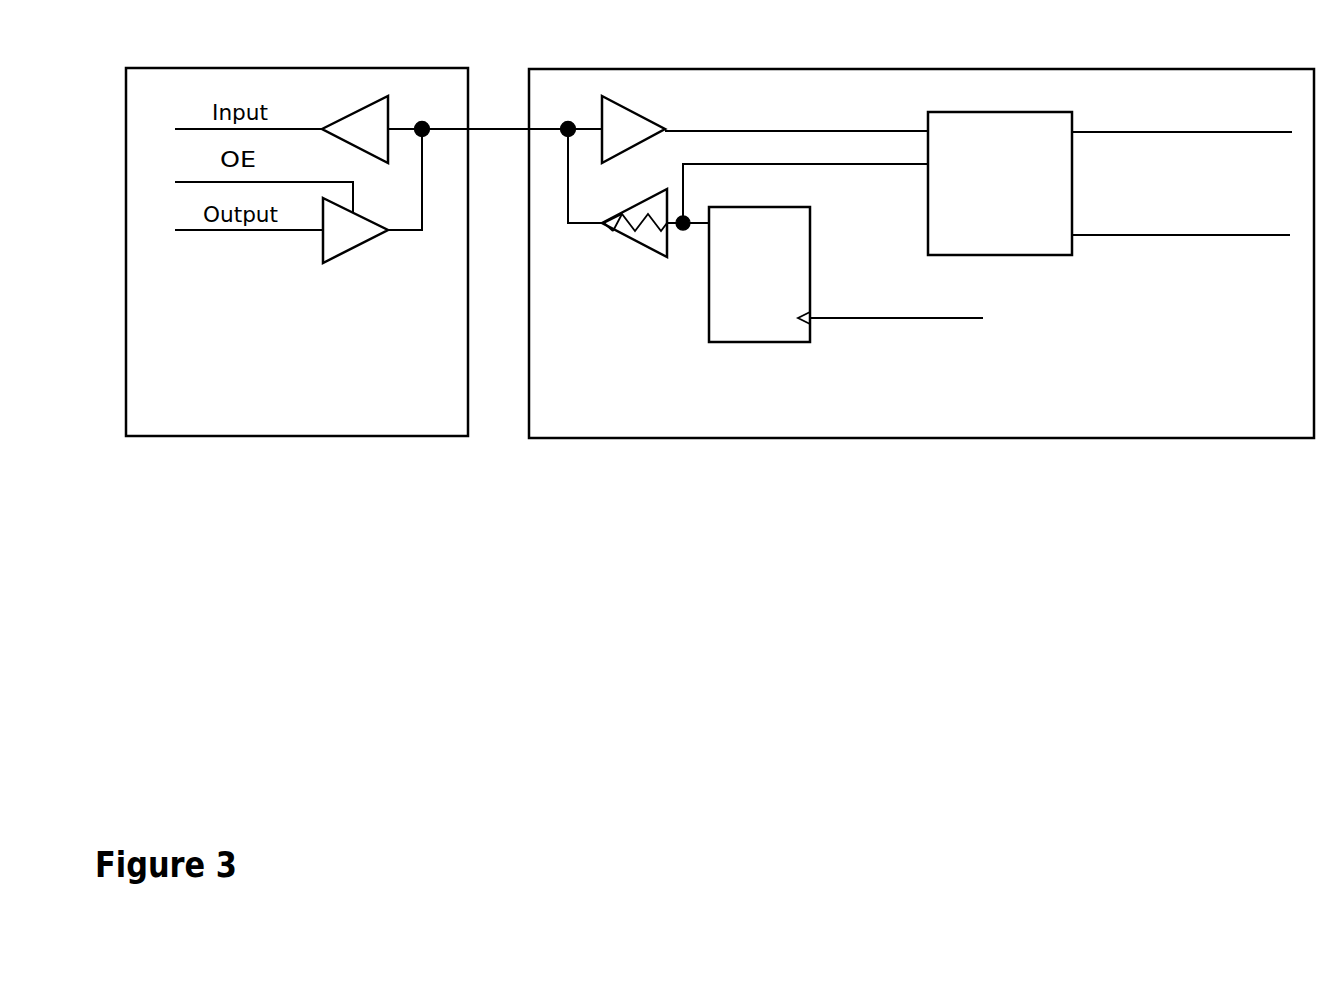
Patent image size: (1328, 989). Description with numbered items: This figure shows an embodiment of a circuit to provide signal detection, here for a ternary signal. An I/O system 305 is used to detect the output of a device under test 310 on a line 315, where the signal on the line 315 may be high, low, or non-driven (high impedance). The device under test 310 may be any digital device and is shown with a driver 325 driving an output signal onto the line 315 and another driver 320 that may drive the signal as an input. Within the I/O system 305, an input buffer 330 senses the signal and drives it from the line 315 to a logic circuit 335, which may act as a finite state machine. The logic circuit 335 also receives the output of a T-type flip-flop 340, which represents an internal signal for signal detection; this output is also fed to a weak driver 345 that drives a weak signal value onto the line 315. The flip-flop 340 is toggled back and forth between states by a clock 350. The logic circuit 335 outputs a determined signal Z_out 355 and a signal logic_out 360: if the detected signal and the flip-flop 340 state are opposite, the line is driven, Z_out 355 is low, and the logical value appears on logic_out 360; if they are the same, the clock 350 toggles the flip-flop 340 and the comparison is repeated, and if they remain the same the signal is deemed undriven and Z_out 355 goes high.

The I/O system 305 is at (1306, 428).
The device under test 310 is at (448, 428).
The line 315 is at (487, 125).
The driver 320 is at (358, 99).
The driver 325 is at (363, 250).
The input buffer 330 is at (632, 98).
The logic circuit 335 is at (1068, 248).
The T-type flip-flop 340 is at (761, 332).
The weak driver 345 is at (645, 255).
The clock 350 is at (911, 348).
The Z_out 355 is at (1204, 162).
The logic_out 360 is at (1204, 262).